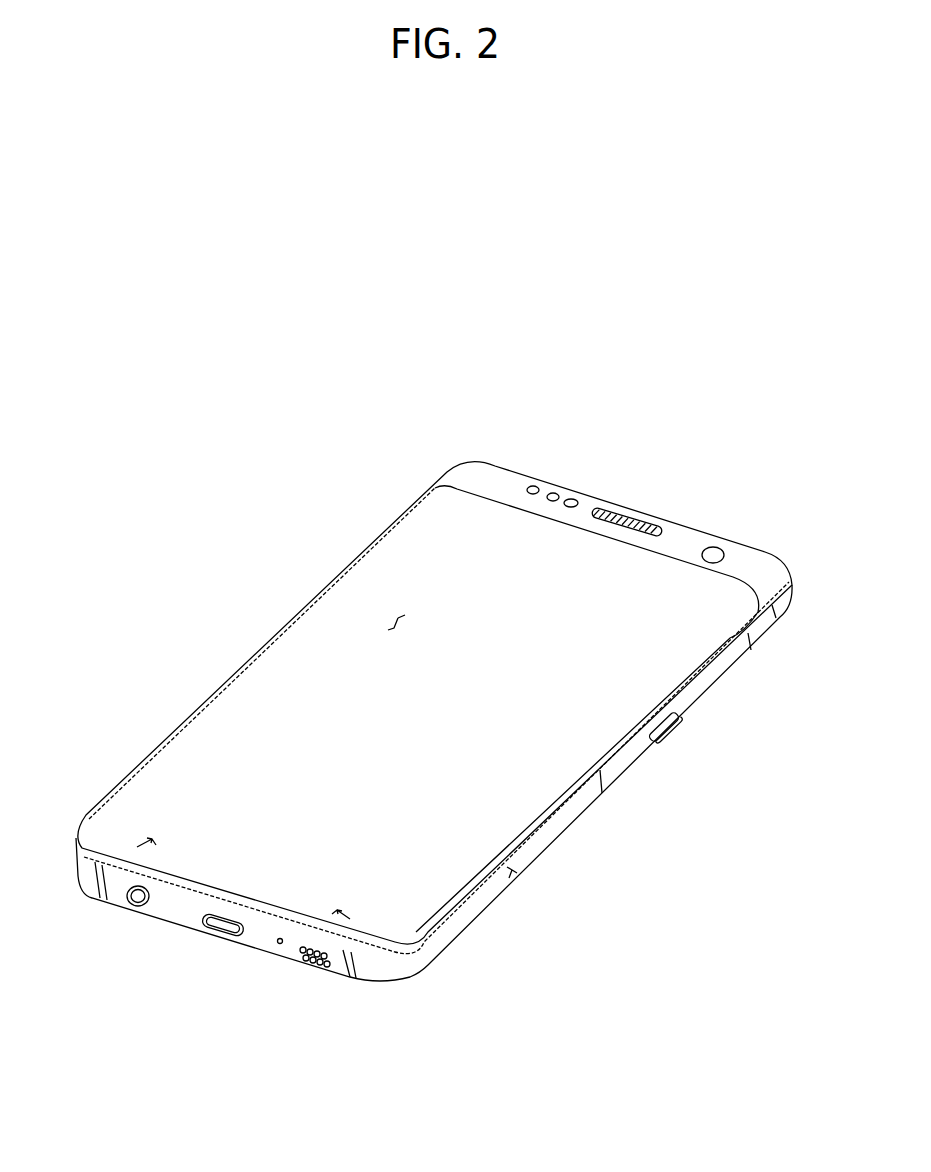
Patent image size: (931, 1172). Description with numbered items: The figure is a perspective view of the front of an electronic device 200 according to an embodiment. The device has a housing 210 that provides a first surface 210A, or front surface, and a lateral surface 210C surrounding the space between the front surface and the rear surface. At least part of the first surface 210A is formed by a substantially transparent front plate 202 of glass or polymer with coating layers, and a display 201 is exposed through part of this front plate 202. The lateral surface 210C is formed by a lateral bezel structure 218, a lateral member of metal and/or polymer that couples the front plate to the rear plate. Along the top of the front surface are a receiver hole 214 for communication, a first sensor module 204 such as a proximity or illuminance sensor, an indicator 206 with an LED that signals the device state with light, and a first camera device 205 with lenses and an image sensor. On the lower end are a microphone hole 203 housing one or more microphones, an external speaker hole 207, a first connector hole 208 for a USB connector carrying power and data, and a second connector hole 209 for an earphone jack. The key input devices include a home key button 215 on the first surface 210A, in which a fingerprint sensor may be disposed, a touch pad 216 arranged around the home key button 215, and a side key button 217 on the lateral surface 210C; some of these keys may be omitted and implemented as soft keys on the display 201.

The electronic device 200 is at (237, 620).
The display 201 is at (254, 762).
The front plate 202 is at (752, 566).
The microphone hole 203 is at (278, 944).
The first sensor module 204 is at (572, 498).
The first camera device 205 is at (714, 546).
The indicator 206 is at (533, 485).
The external speaker hole 207 is at (307, 968).
The first connector hole 208 is at (227, 937).
The second connector hole 209 is at (128, 900).
The housing 210 is at (600, 785).
The first surface 210A is at (398, 618).
The lateral surface 210C is at (513, 871).
The receiver hole 214 is at (623, 512).
The home key button 215 is at (206, 918).
The touch pad 216 is at (134, 847).
The side key button 217 is at (670, 735).
The lateral bezel structure 218 is at (723, 670).